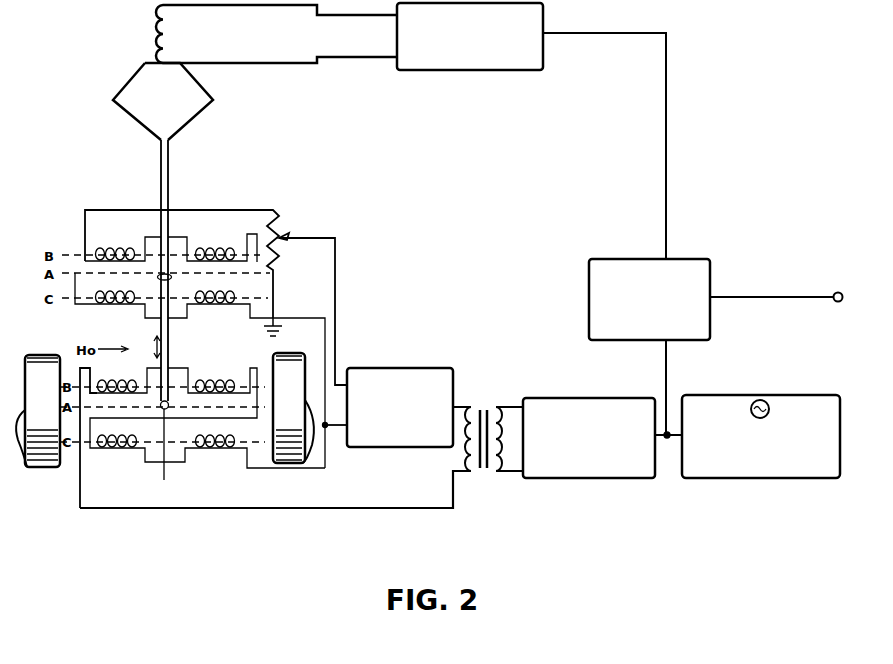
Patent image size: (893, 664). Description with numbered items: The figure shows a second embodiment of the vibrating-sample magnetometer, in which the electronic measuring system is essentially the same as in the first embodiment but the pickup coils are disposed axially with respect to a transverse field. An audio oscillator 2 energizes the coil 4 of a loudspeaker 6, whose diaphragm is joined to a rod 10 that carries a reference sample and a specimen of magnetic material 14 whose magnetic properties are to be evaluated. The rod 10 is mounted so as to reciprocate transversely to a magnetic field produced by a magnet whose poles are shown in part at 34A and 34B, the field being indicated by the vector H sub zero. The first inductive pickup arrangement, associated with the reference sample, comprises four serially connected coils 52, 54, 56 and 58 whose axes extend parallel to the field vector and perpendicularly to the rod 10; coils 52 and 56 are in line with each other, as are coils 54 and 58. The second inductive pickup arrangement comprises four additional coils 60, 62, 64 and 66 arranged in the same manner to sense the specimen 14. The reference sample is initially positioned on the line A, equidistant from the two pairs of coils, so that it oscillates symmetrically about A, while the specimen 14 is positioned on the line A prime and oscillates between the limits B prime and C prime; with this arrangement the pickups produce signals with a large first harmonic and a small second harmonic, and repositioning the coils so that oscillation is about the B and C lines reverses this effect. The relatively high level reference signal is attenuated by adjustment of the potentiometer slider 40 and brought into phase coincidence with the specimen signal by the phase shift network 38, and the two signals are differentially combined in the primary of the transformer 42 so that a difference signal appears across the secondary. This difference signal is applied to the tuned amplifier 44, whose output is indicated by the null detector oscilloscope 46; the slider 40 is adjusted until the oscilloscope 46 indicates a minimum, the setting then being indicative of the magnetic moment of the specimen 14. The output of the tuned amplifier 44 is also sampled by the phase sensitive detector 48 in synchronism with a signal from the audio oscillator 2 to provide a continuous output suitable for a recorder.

The audio oscillator 2 is at (456, 70).
The coil 4 is at (155, 35).
The loudspeaker 6 is at (128, 80).
The rod 10 is at (170, 163).
The specimen of magnetic material 14 is at (159, 455).
The magnet pole 34A is at (40, 468).
The magnet pole 34B is at (290, 463).
The phase shift network 38 is at (430, 368).
The potentiometer slider 40 is at (290, 235).
The transformer 42 is at (484, 480).
The tuned amplifier 44 is at (596, 480).
The null detector oscilloscope 46 is at (756, 480).
The phase sensitive detector 48 is at (588, 310).
The coil 52 is at (100, 248).
The coil 54 is at (95, 310).
The coil 56 is at (210, 250).
The coil 58 is at (210, 312).
The coil 60 is at (118, 375).
The coil 62 is at (110, 448).
The coil 64 is at (209, 385).
The coil 66 is at (212, 448).